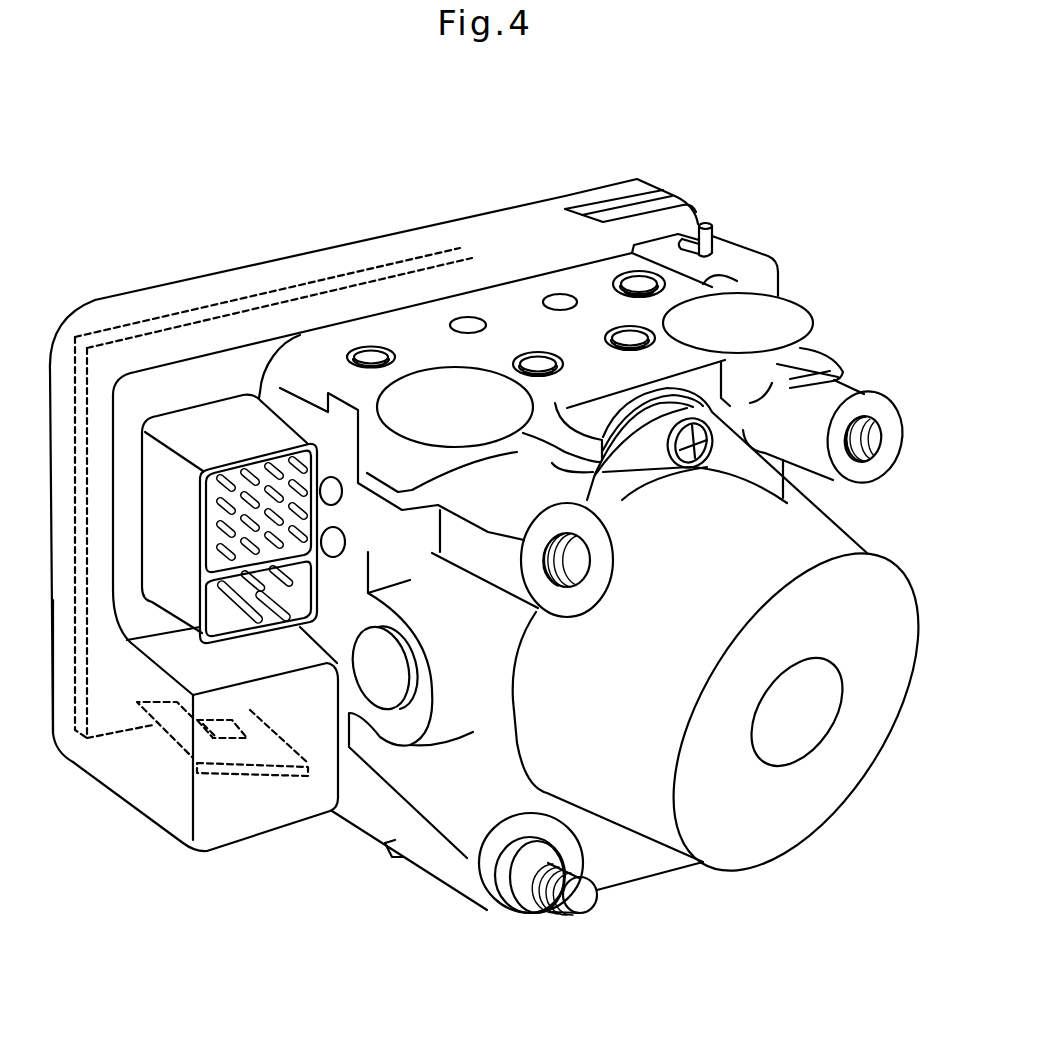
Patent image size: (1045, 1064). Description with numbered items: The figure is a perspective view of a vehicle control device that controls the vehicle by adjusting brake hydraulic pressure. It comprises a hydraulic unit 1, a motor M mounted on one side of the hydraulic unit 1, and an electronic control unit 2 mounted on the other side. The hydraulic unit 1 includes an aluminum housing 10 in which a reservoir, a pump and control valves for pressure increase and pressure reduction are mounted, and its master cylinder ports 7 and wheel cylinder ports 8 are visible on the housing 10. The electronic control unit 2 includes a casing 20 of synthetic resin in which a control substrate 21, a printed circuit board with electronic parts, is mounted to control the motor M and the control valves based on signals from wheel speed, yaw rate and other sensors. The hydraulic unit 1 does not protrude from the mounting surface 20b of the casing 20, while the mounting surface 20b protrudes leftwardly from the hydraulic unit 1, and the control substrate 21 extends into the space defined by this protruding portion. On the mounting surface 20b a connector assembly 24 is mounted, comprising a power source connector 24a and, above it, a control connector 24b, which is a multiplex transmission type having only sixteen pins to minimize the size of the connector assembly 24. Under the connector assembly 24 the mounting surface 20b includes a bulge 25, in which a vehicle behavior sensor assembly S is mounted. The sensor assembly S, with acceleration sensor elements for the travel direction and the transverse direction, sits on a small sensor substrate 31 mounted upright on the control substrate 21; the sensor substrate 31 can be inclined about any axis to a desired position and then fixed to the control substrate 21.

The hydraulic unit 1 is at (800, 288).
The electronic control unit 2 is at (518, 195).
The master cylinder ports 7 is at (873, 412).
The wheel cylinder ports 8 is at (371, 353).
The housing 10 is at (473, 820).
The casing 20 is at (320, 265).
The mounting surface 20b is at (132, 560).
The control substrate 21 is at (257, 303).
The connector assembly 24 is at (195, 415).
The power source connector 24a is at (225, 625).
The control connector 24b is at (245, 477).
The bulge 25 is at (298, 793).
The sensor substrate 31 is at (257, 745).
The vehicle behavior sensor assembly S is at (193, 757).
The motor M is at (678, 627).